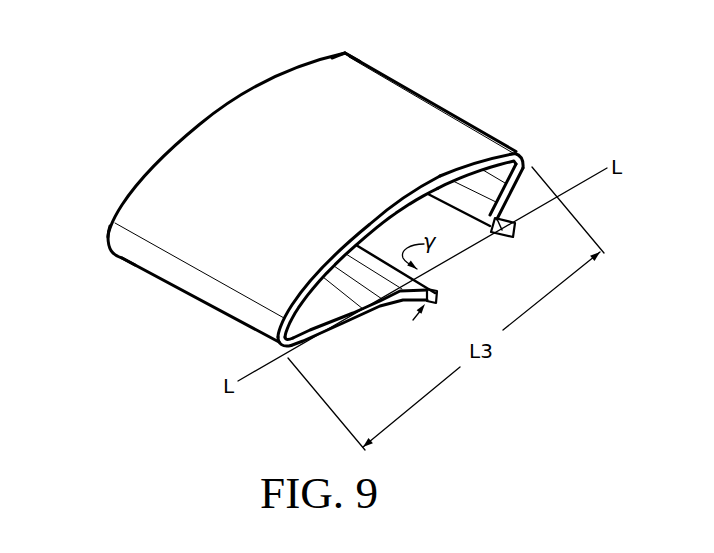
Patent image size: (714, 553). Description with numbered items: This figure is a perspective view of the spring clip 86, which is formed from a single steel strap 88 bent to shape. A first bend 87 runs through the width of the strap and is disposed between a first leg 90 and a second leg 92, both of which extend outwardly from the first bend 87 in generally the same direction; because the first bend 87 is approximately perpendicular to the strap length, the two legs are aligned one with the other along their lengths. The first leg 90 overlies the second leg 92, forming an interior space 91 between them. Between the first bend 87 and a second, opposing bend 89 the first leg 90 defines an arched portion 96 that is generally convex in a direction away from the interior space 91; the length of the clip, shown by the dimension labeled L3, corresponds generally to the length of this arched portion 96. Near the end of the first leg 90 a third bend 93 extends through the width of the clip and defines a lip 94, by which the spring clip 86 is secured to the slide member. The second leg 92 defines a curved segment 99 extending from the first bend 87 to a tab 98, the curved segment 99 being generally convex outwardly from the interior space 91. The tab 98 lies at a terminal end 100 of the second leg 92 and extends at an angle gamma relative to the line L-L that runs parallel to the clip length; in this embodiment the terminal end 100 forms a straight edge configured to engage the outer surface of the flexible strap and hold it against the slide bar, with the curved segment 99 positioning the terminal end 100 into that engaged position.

The spring clip 86 is at (201, 95).
The first bend 87 is at (108, 236).
The steel strap 88 is at (465, 145).
The second bend 89 is at (350, 50).
The first leg 90 is at (390, 110).
The interior space 91 is at (325, 312).
The second leg 92 is at (380, 308).
The third bend 93 is at (502, 218).
The lip 94 is at (487, 222).
The arched portion 96 is at (250, 220).
The tab 98 is at (367, 258).
The curved segment 99 is at (297, 326).
The terminal end 100 is at (440, 299).